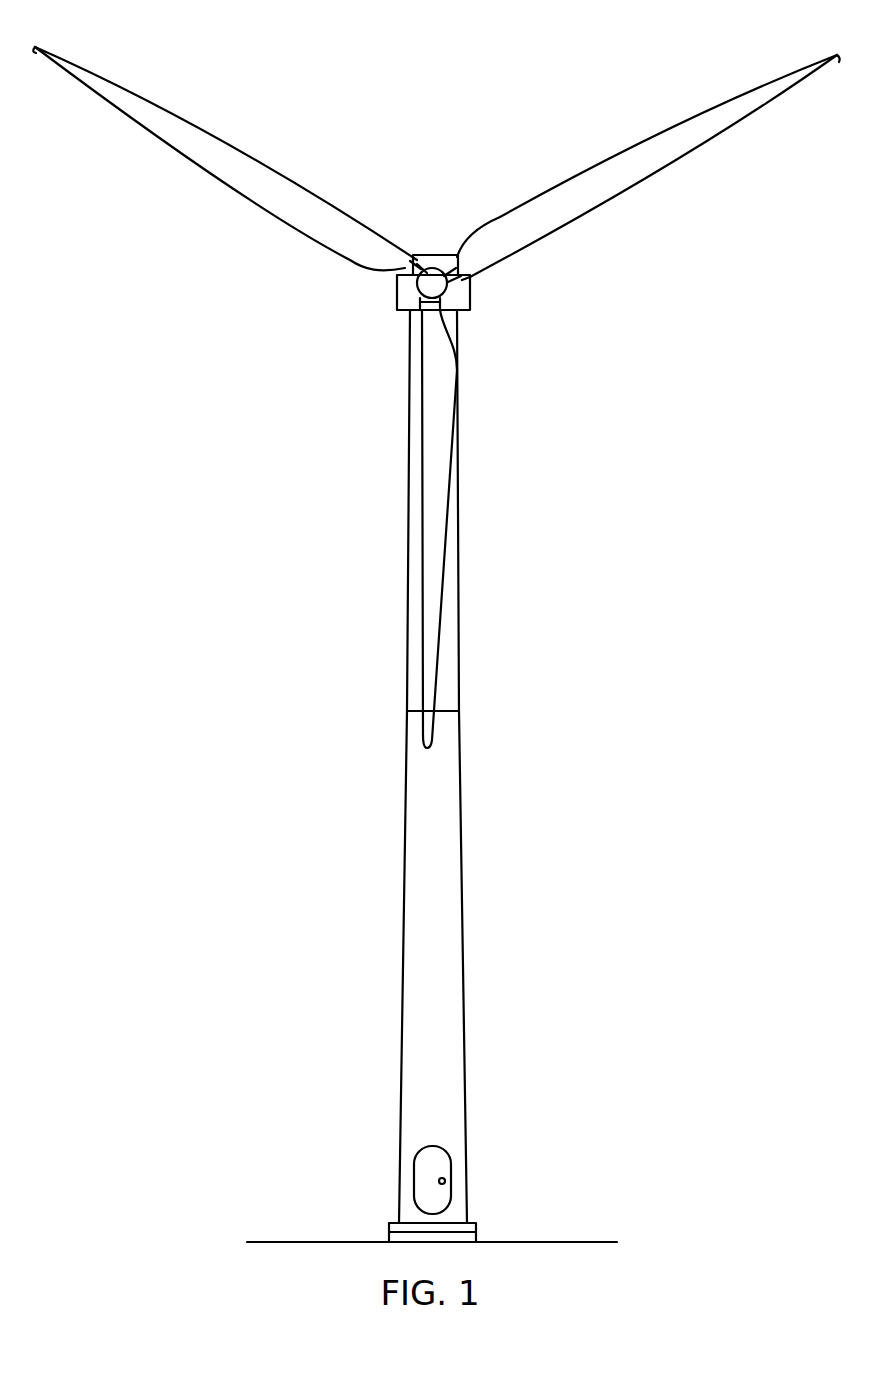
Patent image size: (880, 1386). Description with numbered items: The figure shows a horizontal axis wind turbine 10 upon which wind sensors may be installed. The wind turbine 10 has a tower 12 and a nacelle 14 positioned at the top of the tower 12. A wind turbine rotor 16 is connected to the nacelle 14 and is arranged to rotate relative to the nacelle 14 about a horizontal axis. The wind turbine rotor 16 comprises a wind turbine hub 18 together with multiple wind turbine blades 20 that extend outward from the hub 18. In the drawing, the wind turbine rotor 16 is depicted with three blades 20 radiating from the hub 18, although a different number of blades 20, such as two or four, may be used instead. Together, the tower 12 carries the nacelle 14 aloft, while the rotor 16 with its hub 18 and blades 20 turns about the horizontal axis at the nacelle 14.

The wind turbine 10 is at (436, 78).
The tower 12 is at (462, 872).
The nacelle 14 is at (443, 255).
The wind turbine rotor 16 is at (404, 298).
The wind turbine hub 18 is at (440, 283).
The wind turbine blades 20 is at (237, 150).